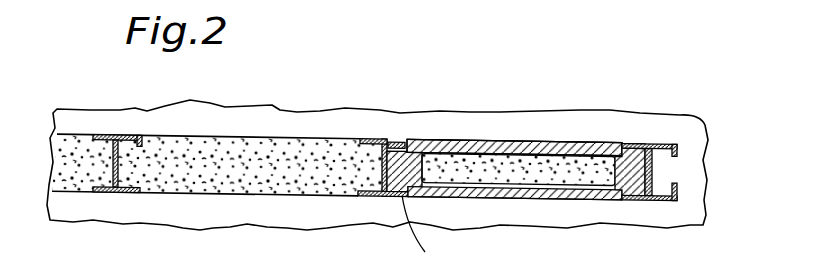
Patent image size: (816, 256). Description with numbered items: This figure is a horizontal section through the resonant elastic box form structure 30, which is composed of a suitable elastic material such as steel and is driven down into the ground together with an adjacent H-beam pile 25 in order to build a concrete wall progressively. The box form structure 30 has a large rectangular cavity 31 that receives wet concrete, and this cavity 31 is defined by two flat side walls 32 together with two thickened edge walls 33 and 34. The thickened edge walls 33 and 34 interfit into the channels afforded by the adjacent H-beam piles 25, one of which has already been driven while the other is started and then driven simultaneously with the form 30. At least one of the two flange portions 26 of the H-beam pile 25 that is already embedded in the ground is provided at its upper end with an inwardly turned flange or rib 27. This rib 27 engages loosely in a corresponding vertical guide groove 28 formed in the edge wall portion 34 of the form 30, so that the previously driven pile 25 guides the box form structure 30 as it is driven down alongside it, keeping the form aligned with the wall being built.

The H-beam pile 25 is at (632, 146).
The flange portion 26 is at (399, 141).
The inwardly turned flange or rib 27 is at (418, 141).
The vertical guide groove 28 is at (437, 141).
The resonant elastic box form structure 30 is at (507, 139).
The rectangular cavity 31 is at (521, 156).
The flat side wall 32 is at (573, 147).
The thickened edge wall 33 is at (394, 140).
The thickened edge wall 34 is at (647, 147).